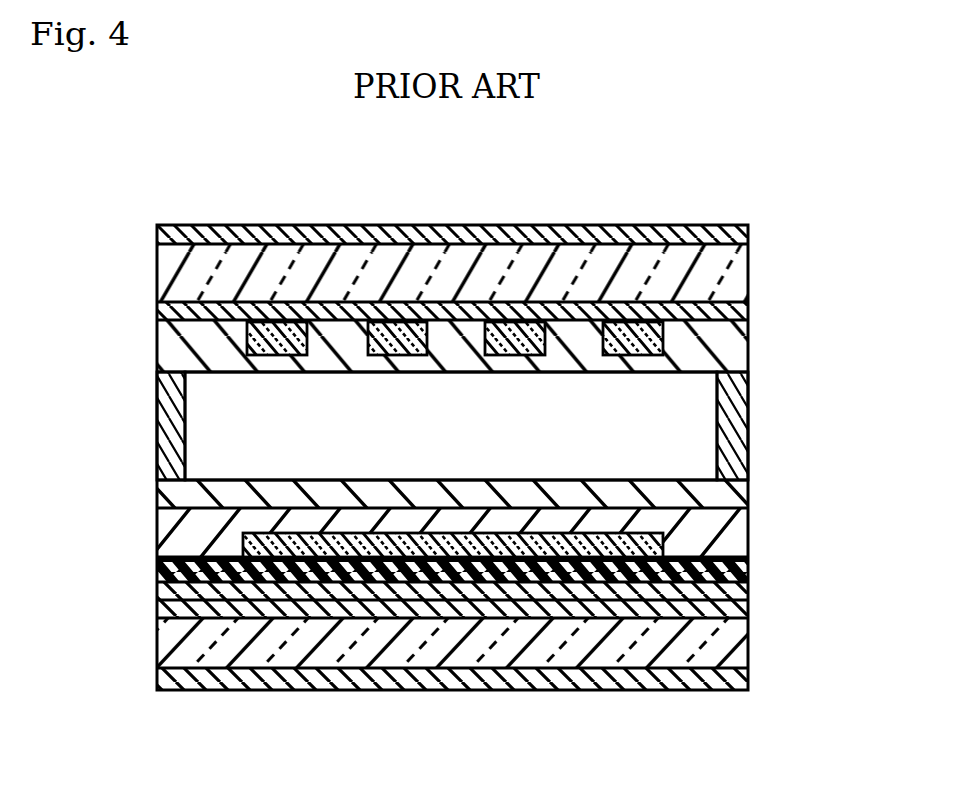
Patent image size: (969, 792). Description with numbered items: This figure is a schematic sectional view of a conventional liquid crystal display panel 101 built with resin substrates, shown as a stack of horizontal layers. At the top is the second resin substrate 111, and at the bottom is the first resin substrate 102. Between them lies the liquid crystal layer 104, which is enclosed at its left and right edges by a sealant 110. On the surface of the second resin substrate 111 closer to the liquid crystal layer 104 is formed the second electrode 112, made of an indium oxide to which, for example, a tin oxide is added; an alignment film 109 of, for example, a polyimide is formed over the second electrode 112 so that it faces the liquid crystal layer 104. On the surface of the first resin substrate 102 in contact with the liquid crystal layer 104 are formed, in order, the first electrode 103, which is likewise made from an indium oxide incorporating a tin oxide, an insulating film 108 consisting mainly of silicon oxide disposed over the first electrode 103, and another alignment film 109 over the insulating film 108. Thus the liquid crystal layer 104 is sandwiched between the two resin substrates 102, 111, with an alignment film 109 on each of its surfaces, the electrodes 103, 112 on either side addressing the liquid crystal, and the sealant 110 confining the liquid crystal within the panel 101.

The liquid crystal display panel 101 is at (802, 171).
The first resin substrate 102 is at (733, 649).
The first electrode 103 is at (663, 546).
The liquid crystal layer 104 is at (693, 427).
The insulating film 108 is at (733, 522).
The alignment film 109 is at (735, 359).
The sealant 110 is at (158, 425).
The second resin substrate 111 is at (733, 276).
The second electrode 112 is at (663, 333).